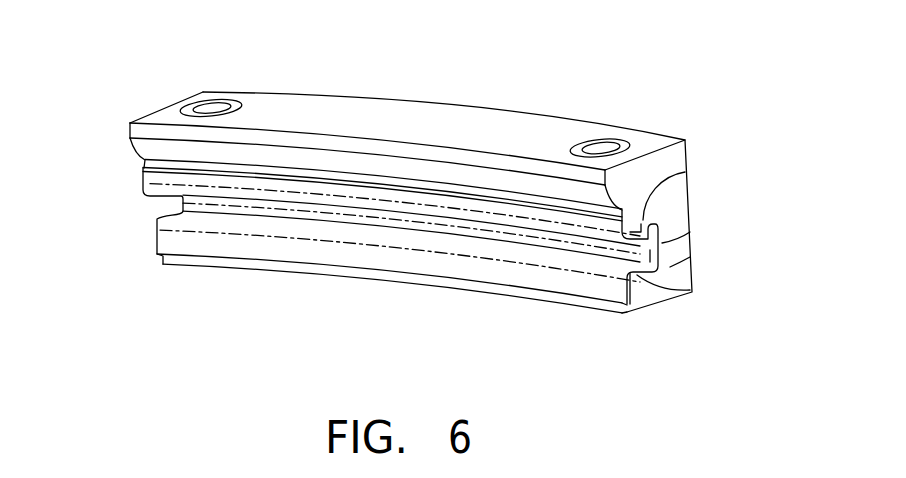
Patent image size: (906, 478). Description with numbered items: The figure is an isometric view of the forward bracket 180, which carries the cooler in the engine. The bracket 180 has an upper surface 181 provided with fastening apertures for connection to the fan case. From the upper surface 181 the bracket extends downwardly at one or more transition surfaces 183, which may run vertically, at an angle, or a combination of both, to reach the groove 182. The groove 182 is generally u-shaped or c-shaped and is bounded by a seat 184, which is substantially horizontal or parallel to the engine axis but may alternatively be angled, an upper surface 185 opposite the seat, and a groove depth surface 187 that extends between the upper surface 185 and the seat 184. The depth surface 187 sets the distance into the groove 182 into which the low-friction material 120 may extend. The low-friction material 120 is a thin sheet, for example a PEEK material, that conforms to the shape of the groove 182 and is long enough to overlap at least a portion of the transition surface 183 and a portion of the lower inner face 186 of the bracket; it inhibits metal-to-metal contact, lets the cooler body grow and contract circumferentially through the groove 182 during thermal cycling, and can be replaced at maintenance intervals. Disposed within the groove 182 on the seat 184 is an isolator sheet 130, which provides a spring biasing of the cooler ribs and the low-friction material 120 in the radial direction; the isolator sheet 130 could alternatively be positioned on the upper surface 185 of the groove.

The forward bracket 180 is at (635, 62).
The upper surface 181 is at (393, 113).
The groove 182 is at (663, 220).
The transition surface 183 is at (128, 125).
The seat 184 is at (650, 273).
The upper surface of the groove 185 is at (655, 186).
The lower inner face 186 is at (620, 303).
The groove depth surface 187 is at (660, 248).
The low-friction material 120 is at (272, 253).
The isolator sheet 130 is at (637, 278).